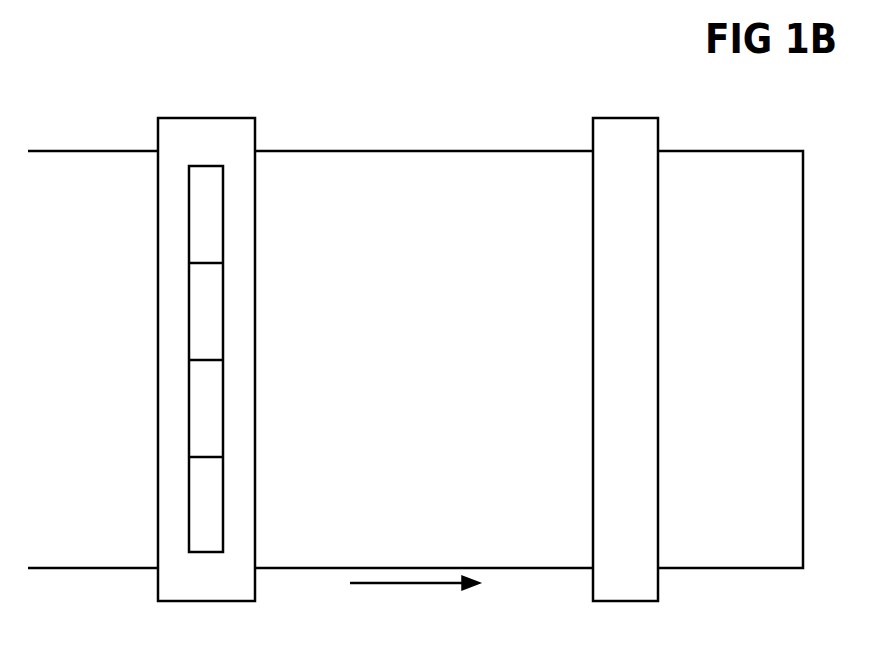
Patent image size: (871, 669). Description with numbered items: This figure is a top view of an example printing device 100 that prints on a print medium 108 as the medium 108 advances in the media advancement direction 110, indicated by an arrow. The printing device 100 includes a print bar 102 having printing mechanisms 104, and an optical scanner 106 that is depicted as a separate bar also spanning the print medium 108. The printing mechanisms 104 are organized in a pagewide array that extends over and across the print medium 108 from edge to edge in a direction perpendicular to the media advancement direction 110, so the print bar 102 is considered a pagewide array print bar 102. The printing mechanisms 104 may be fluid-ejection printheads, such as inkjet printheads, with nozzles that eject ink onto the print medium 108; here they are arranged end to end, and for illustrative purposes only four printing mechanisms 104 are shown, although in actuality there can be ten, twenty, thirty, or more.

The printing device 100 is at (420, 89).
The print bar 102 is at (208, 118).
The printing mechanisms 104 is at (223, 412).
The optical scanner 106 is at (618, 118).
The print medium 108 is at (87, 569).
The media advancement direction 110 is at (397, 584).